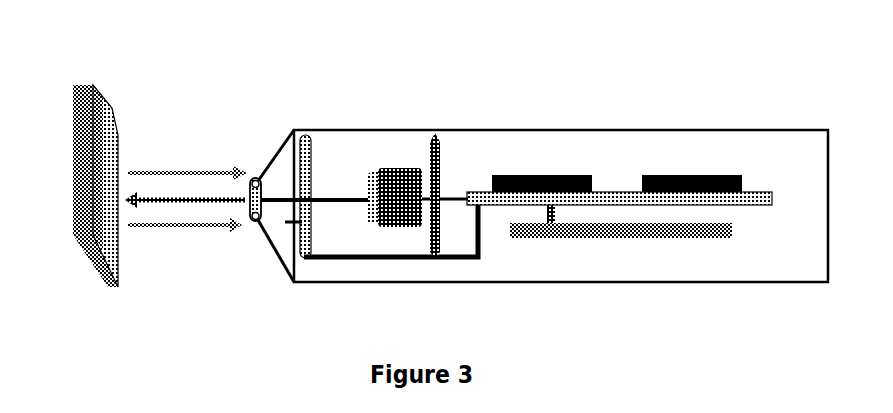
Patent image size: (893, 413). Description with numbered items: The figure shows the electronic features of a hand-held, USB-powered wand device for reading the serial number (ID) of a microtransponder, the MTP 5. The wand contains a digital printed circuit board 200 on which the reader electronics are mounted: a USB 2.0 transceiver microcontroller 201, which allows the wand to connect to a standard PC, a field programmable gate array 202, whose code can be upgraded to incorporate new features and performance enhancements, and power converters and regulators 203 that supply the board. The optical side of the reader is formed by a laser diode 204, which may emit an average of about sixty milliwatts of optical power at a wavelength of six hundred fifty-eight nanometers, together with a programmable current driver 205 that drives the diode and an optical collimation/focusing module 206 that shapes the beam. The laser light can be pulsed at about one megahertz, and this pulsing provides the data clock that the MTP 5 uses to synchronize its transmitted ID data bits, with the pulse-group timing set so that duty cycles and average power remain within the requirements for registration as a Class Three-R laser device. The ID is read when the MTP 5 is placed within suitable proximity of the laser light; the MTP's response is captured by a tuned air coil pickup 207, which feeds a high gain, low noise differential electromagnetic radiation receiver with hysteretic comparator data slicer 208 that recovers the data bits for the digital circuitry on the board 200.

The MTP 5 is at (100, 280).
The digital printed circuit board 200 is at (615, 195).
The USB 2.0 transceiver microcontroller 201 is at (692, 182).
The field programmable gate array (FPGA) 202 is at (518, 170).
The power converters and regulators 203 is at (575, 235).
The laser diode 204 is at (400, 162).
The programmable current driver 205 is at (434, 137).
The optical collimation/focusing module 206 is at (368, 178).
The tuned air coil pickup 207 is at (255, 222).
The differential electromagnetic radiation receiver with hysteretic comparator data 208 is at (306, 256).